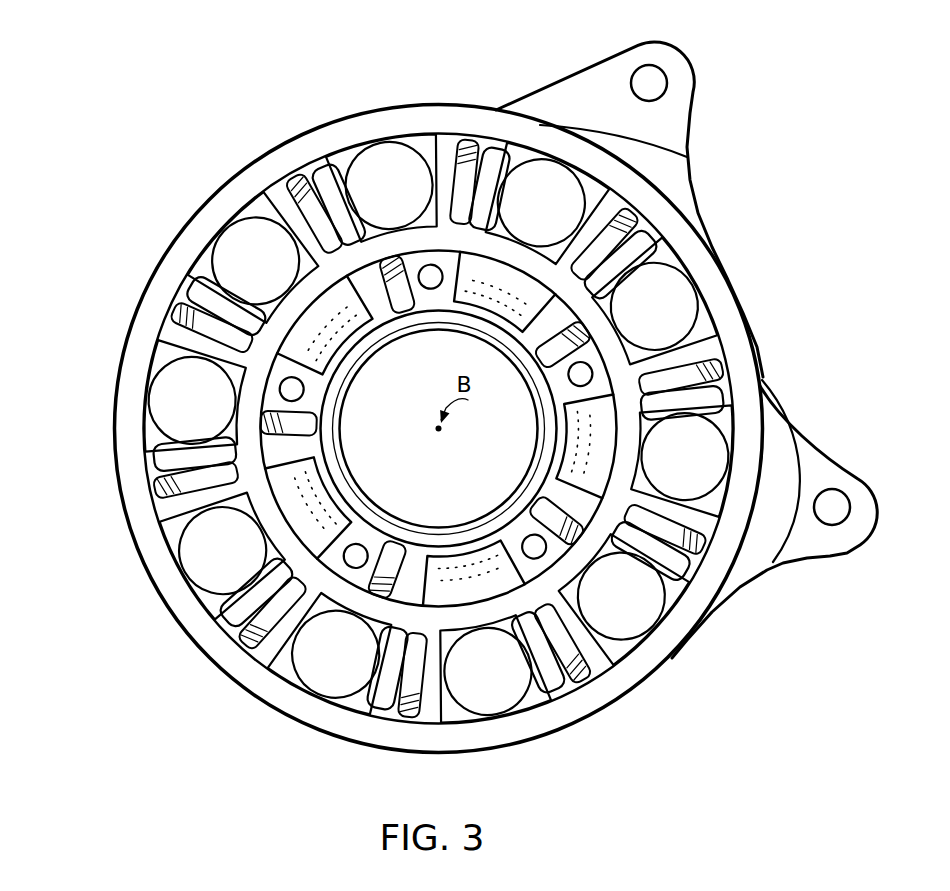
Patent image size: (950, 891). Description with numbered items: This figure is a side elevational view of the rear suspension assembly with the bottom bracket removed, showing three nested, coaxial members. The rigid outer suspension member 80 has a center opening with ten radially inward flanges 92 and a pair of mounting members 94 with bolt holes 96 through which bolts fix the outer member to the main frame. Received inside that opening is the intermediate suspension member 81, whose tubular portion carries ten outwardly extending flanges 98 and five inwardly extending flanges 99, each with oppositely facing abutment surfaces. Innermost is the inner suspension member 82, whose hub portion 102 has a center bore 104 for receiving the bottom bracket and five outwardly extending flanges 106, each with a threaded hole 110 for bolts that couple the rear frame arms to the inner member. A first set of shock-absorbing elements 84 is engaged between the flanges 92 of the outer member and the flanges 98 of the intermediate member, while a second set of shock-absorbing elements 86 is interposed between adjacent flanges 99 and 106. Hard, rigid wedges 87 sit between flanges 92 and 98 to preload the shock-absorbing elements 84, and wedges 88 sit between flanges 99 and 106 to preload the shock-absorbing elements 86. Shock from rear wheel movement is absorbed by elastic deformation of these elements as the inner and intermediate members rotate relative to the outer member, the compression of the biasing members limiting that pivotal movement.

The outer suspension member 80 is at (262, 147).
The intermediate suspension member 81 is at (318, 283).
The inner suspension member 82 is at (338, 352).
The shock-absorbing elements 84 is at (388, 150).
The shock-absorbing elements 86 is at (295, 508).
The wedges 87 is at (180, 300).
The wedges 88 is at (272, 422).
The flanges 92 is at (693, 352).
The mounting members 94 is at (588, 76).
The bolt holes 96 is at (662, 86).
The flanges 98 is at (726, 381).
The flanges 99 is at (613, 297).
The hub portion 102 is at (545, 426).
The center bore 104 is at (495, 503).
The flanges 106 is at (560, 538).
The threaded hole 110 is at (300, 393).